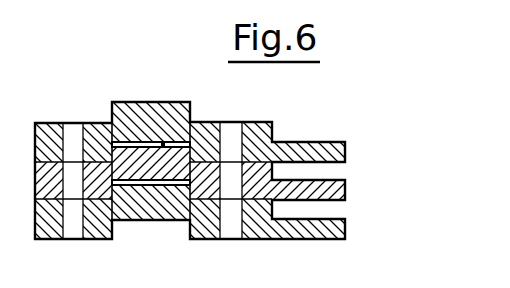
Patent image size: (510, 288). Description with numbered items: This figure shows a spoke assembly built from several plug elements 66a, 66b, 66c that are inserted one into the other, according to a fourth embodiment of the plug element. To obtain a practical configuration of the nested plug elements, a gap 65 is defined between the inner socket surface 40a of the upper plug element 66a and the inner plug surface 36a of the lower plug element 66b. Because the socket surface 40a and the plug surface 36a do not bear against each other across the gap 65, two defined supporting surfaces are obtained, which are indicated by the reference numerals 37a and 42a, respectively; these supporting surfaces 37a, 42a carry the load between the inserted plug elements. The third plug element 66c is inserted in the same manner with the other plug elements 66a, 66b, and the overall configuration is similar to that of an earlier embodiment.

The inner plug surface 36a is at (144, 103).
The gap 65 is at (169, 143).
The supporting surface 42a is at (258, 122).
The inner socket surface 40a is at (145, 221).
The supporting surface 37a is at (270, 239).
The plug element 66a is at (347, 150).
The plug element 66b is at (347, 189).
The plug element 66c is at (347, 228).